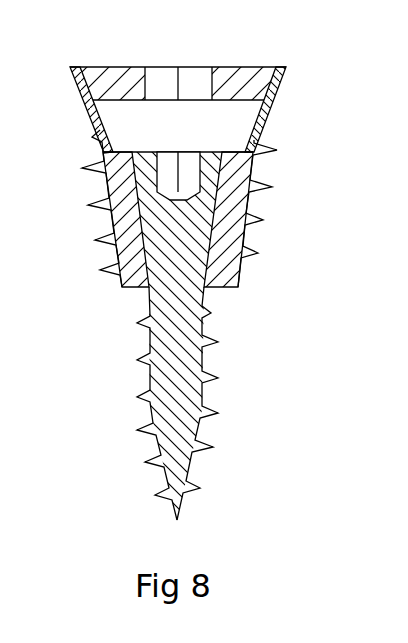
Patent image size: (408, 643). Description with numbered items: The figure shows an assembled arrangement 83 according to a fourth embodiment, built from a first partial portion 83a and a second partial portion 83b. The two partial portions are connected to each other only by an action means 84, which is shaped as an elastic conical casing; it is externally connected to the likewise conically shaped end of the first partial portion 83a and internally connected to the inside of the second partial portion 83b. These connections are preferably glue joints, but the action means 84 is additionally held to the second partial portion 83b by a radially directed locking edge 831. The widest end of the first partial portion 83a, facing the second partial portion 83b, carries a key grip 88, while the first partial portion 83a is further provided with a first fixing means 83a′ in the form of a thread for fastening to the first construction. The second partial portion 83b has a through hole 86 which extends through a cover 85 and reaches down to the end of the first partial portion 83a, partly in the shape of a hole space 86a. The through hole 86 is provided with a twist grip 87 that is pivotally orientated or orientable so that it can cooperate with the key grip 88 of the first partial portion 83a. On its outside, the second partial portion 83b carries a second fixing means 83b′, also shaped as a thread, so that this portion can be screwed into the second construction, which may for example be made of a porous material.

The assembled arrangement 83 is at (96, 324).
The first partial portion 83a is at (187, 427).
The first fixing means 83a′ is at (213, 373).
The second partial portion 83b is at (268, 104).
The second fixing means 83b′ is at (268, 180).
The action means 84 is at (257, 205).
The cover 85 is at (118, 82).
The through hole 86 is at (195, 82).
The hole space 86a is at (133, 118).
The twist grip 87 is at (177, 80).
The locking edge 831 is at (257, 148).
The key grip 88 is at (165, 195).